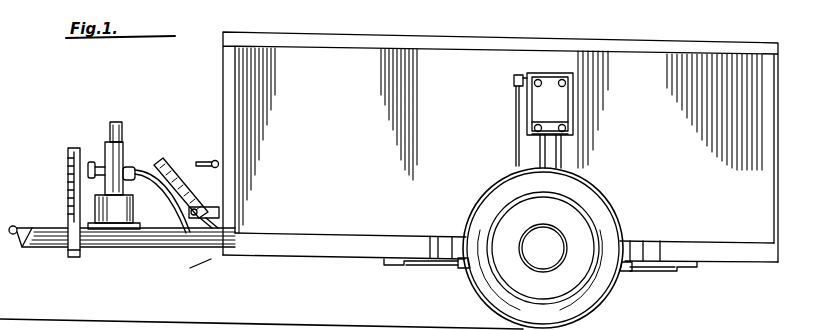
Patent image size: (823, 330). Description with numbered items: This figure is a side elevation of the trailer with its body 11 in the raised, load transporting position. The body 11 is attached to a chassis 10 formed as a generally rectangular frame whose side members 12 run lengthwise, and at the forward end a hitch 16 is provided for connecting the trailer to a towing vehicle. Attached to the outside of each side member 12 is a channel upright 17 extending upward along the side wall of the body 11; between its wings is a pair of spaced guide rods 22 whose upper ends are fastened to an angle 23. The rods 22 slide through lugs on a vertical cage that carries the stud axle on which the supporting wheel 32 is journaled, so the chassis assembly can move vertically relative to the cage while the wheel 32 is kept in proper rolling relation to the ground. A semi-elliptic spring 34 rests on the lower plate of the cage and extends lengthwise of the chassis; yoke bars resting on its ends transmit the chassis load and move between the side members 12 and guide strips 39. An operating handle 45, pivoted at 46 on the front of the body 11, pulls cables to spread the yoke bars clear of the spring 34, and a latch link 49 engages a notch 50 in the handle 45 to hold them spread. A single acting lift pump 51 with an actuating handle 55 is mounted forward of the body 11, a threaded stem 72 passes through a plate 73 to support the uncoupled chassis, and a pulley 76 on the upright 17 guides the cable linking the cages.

The chassis 10 is at (207, 265).
The body 11 is at (336, 143).
The side member 12 is at (731, 258).
The hitch 16 is at (14, 224).
The channel upright 17 is at (580, 103).
The guide rod 22 is at (536, 151).
The angle 23 is at (546, 125).
The supporting wheel 32 is at (613, 221).
The semi-elliptic spring 34 is at (460, 269).
The guide strip 39 is at (417, 267).
The operating handle 45 is at (186, 180).
The pivot 46 is at (195, 209).
The latch link 49 is at (200, 162).
The notch 50 is at (152, 172).
The lift pump 51 is at (124, 216).
The actuating handle 55 is at (108, 164).
The stem 72 is at (68, 166).
The plate 73 is at (44, 247).
The pulley 76 is at (513, 80).